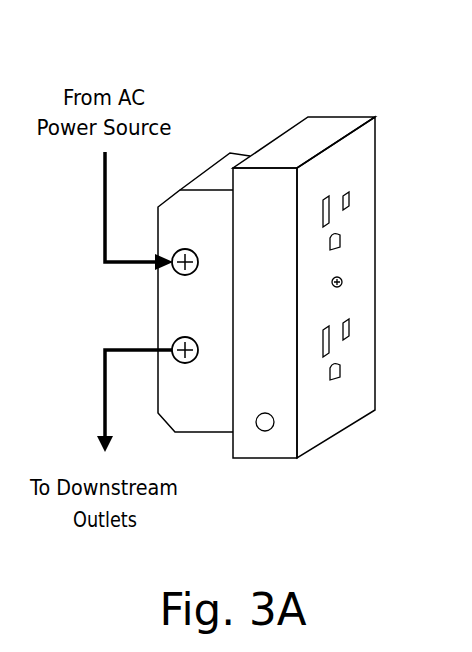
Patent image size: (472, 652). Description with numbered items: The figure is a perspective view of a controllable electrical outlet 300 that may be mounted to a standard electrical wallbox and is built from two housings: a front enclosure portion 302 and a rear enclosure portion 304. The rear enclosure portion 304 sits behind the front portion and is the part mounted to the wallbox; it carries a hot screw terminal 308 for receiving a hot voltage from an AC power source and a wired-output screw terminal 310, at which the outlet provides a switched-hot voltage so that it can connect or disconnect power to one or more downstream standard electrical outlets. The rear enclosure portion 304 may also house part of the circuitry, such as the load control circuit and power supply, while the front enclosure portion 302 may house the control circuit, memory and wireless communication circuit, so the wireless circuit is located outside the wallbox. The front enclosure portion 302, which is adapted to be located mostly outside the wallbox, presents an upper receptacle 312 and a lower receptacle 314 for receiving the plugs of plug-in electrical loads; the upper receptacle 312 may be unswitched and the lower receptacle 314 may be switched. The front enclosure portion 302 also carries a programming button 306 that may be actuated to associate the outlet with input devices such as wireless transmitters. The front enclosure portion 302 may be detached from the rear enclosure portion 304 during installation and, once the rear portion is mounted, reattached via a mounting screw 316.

The controllable electrical outlet 300 is at (402, 192).
The front enclosure portion 302 is at (245, 443).
The rear enclosure portion 304 is at (175, 298).
The programming button 306 is at (268, 426).
The hot screw terminal 308 is at (192, 249).
The wired-output screw terminal 310 is at (172, 346).
The upper receptacle 312 is at (339, 183).
The lower receptacle 314 is at (338, 393).
The mounting screw 316 is at (342, 282).